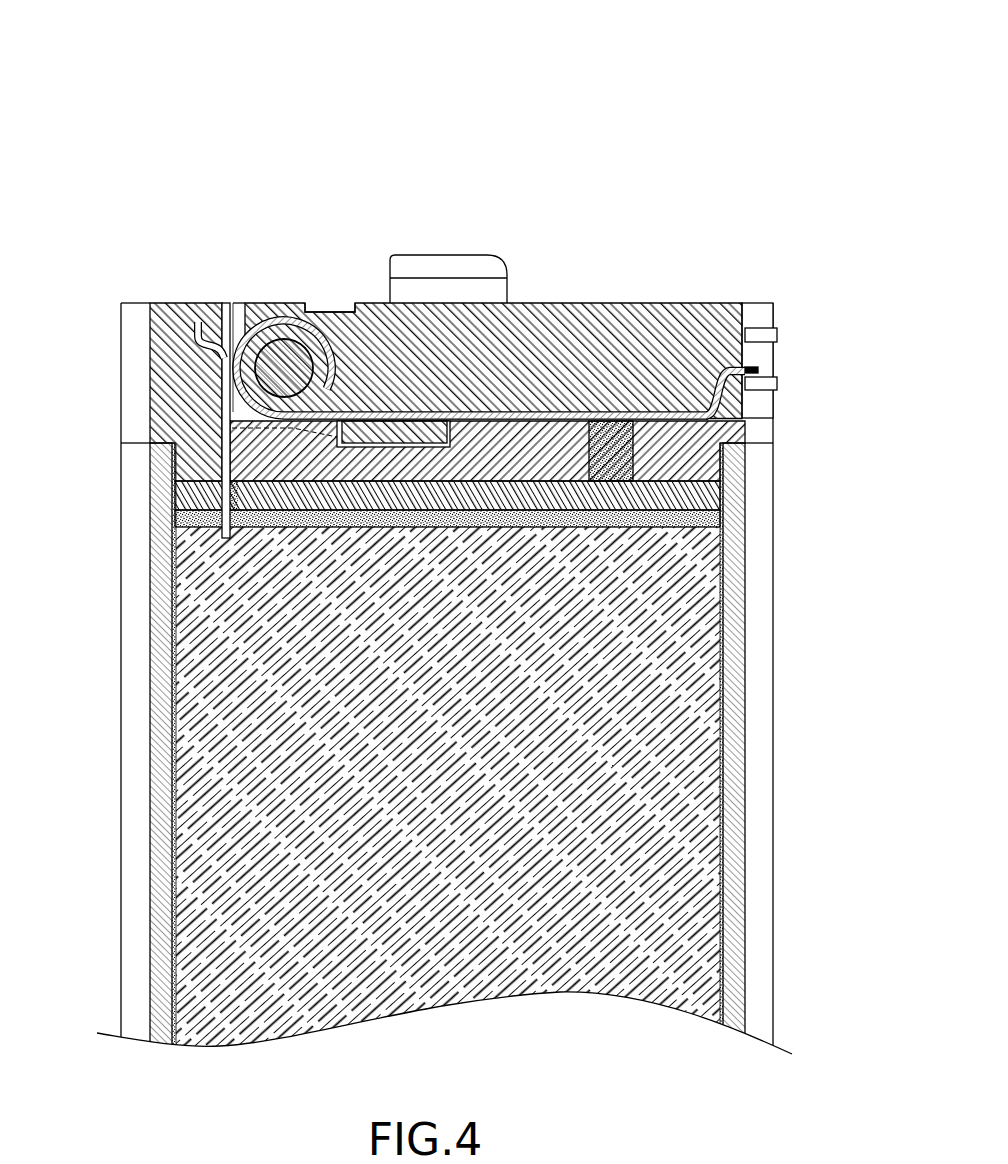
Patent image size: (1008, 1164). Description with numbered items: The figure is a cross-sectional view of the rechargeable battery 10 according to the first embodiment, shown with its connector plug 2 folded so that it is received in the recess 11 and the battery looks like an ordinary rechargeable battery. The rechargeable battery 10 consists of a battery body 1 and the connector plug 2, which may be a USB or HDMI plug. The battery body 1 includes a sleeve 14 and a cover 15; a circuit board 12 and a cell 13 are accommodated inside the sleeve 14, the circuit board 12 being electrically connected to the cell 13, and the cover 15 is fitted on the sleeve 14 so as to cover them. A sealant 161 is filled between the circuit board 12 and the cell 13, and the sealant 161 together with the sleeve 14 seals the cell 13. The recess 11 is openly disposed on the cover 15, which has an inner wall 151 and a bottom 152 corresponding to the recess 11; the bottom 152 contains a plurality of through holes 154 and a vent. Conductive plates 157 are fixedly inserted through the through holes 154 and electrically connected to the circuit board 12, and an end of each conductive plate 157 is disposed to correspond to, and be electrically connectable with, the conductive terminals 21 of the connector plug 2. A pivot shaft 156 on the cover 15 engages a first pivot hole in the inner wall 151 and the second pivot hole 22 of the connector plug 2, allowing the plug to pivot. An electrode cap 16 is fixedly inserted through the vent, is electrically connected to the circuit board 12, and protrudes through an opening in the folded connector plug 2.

The rechargeable battery 10 is at (450, 41).
The battery body 1 is at (773, 707).
The connector plug 2 is at (632, 302).
The recess 11 is at (240, 308).
The circuit board 12 is at (717, 498).
The cell 13 is at (678, 623).
The sleeve 14 is at (732, 775).
The cover 15 is at (172, 303).
The inner wall 151 is at (323, 308).
The bottom 152 is at (528, 412).
The through holes 154 is at (227, 467).
The pivot shaft 156 is at (277, 367).
The conductive plates 157 is at (223, 403).
The electrode cap 16 is at (450, 267).
The sealant 161 is at (722, 517).
The conductive terminals 21 is at (650, 412).
The second pivot hole 22 is at (268, 335).